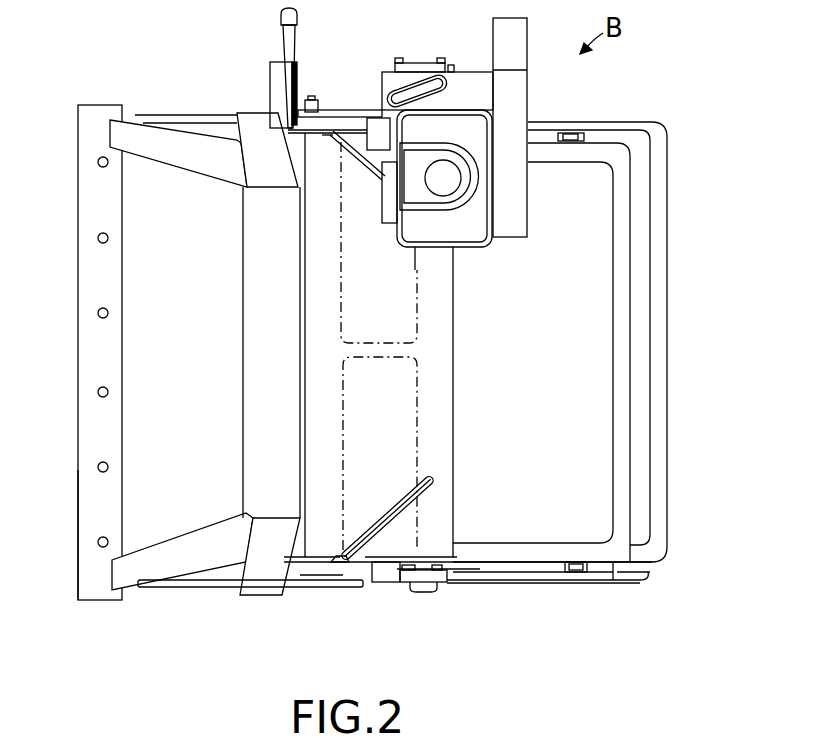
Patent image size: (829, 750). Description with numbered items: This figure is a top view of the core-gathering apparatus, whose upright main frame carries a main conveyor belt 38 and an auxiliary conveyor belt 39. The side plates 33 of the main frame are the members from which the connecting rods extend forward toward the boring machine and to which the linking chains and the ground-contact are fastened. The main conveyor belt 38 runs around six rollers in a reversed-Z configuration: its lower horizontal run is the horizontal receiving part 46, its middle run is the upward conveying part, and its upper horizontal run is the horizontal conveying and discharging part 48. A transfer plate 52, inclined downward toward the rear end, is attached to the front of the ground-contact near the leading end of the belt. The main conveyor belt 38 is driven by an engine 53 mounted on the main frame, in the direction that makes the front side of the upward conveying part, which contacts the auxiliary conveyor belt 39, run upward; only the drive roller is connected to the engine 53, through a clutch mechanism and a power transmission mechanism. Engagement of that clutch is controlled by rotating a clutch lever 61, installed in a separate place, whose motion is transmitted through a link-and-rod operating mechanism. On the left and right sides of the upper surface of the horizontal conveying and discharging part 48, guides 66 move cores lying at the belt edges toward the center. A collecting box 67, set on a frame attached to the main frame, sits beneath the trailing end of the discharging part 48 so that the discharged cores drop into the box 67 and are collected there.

The clutch lever 61 is at (297, 38).
The engine 53 is at (479, 133).
The collecting box 67 is at (598, 300).
The horizontal conveying and discharging part 48 is at (442, 321).
The auxiliary conveyor belt 39 is at (250, 310).
The transfer plate 52 is at (82, 322).
The horizontal receiving part 46 is at (145, 425).
The main conveyor belt 38 is at (135, 492).
The side plate 33 is at (208, 588).
The guide 66 is at (393, 504).